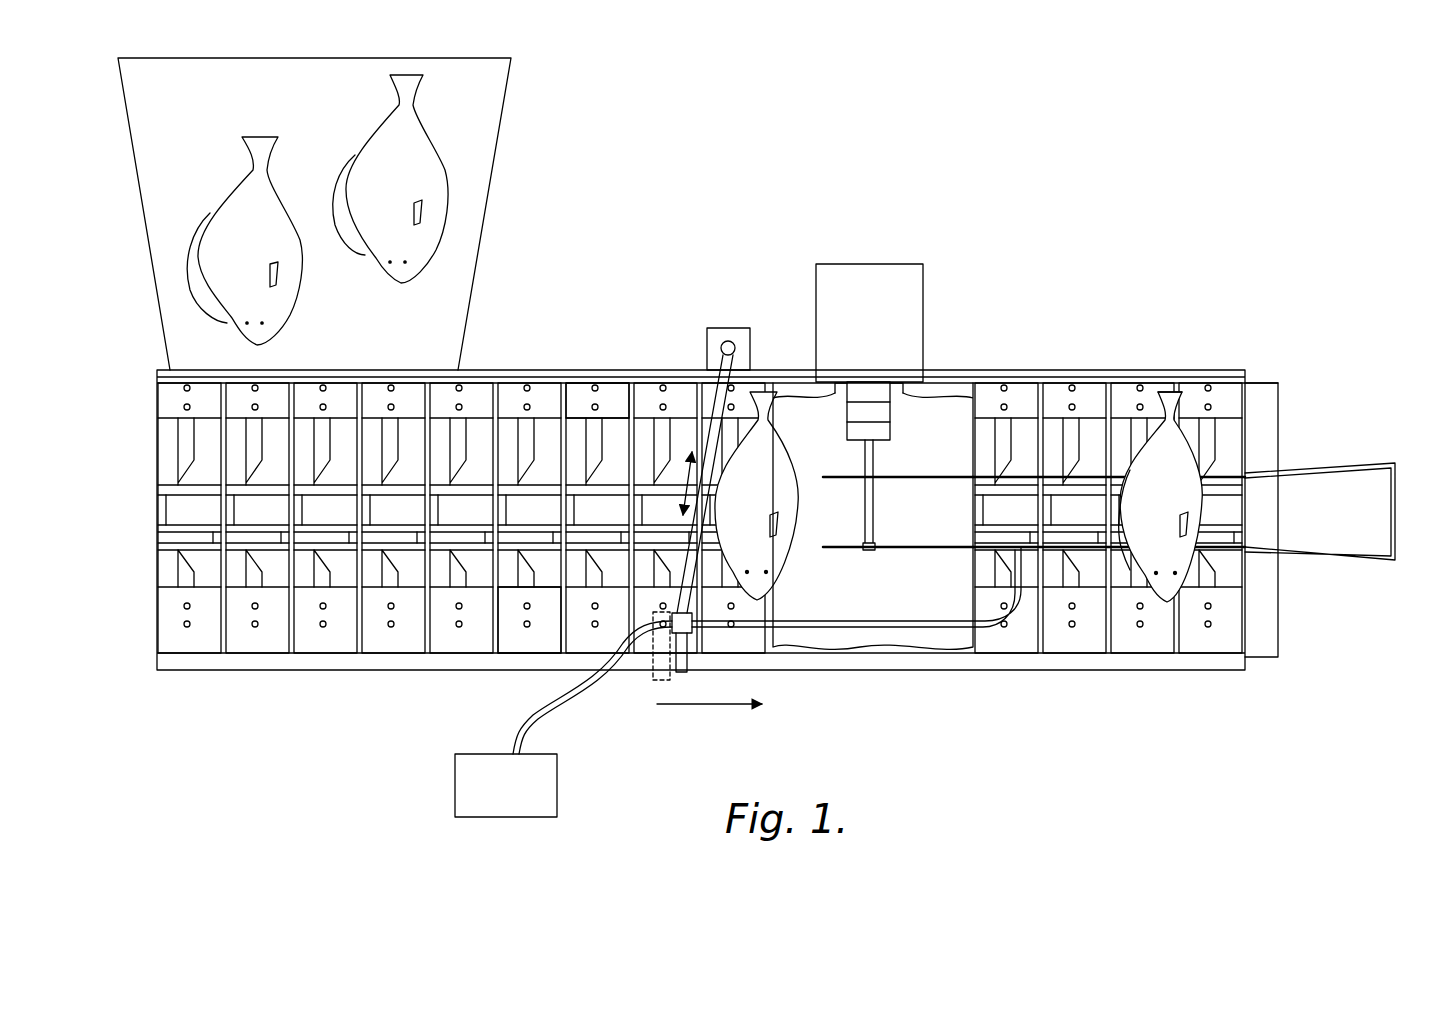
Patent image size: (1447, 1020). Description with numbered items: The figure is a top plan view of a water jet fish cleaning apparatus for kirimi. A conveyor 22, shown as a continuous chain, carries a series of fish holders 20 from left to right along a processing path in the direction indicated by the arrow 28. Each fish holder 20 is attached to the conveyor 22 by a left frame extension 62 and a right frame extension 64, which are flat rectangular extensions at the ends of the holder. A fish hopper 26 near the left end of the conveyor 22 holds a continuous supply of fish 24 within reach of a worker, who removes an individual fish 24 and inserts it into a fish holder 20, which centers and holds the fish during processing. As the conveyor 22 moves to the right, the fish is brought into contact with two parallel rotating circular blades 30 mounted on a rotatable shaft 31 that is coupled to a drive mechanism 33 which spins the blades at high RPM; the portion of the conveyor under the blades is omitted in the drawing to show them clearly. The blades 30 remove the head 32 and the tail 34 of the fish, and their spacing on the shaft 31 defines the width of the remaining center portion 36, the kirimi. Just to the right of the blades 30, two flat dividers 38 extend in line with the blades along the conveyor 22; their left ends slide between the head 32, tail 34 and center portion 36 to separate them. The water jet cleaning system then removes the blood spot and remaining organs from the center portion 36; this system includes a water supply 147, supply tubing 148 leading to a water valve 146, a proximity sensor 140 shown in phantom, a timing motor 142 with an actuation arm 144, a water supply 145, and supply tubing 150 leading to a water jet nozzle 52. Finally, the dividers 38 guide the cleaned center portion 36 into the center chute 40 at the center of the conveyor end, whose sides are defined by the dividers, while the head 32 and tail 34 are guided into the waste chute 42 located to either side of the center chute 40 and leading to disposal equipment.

The fish holder 20 is at (547, 447).
The conveyor 22 is at (392, 688).
The fish 24 is at (430, 220).
The fish hopper 26 is at (478, 128).
The arrow 28 is at (706, 708).
The cutting blades 30 is at (830, 477).
The rotatable shaft 31 is at (868, 515).
The head 32 is at (1167, 560).
The drive mechanism 33 is at (870, 282).
The tail 34 is at (1180, 440).
The center portion 36 is at (1190, 512).
The dividers 38 is at (953, 477).
The center chute 40 is at (1373, 557).
The waste chute 42 is at (1267, 645).
The water jet nozzle 52 is at (1023, 550).
The left frame extension 62 is at (530, 643).
The right frame extension 64 is at (605, 403).
The proximity sensor 140 is at (655, 675).
The timing motor 142 is at (738, 333).
The actuation arm 144 is at (718, 405).
The water supply 145 is at (680, 465).
The water valve 146 is at (695, 628).
The water supply 147 is at (455, 800).
The supply tubing 148 is at (514, 737).
The supply tubing 150 is at (928, 640).